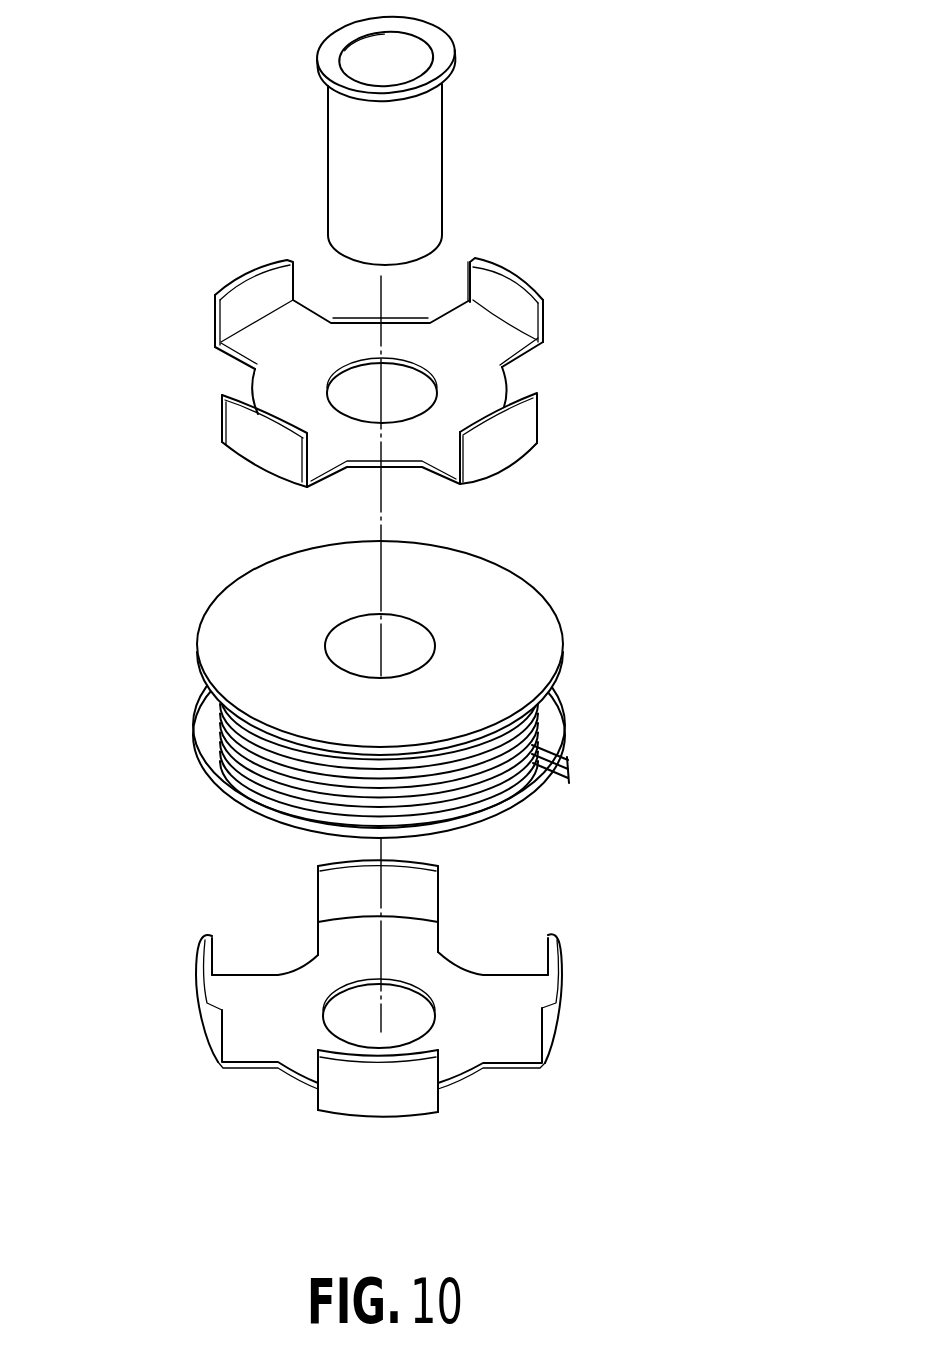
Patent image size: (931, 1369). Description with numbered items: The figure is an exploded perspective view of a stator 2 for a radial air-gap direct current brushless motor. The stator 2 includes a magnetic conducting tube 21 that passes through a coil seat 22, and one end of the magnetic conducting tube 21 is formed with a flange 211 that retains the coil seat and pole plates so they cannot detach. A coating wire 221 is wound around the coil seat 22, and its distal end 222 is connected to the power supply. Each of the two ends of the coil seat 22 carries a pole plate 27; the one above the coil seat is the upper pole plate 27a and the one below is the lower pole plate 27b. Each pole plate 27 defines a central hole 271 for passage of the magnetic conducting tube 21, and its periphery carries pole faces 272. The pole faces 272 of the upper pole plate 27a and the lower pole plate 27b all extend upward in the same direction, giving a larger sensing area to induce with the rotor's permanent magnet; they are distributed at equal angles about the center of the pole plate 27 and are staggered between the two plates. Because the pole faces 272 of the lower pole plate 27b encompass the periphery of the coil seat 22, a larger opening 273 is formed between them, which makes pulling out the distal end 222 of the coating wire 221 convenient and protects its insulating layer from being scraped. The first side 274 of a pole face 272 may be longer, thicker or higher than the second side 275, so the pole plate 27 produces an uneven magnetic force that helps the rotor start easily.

The stator 2 is at (129, 239).
The magnetic conducting tube 21 is at (430, 138).
The flange 211 is at (447, 62).
The coil seat 22 is at (438, 684).
The coating wire 221 is at (553, 703).
The distal end 222 is at (565, 763).
The pole plate 27 is at (556, 228).
The upper pole plate 27a is at (478, 388).
The lower pole plate 27b is at (480, 987).
The central hole 271 is at (360, 387).
The pole faces 272 is at (545, 300).
The larger opening 273 is at (328, 487).
The first side 274 is at (470, 276).
The second side 275 is at (547, 330).